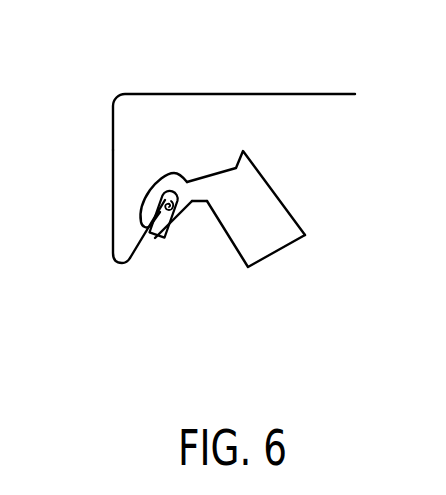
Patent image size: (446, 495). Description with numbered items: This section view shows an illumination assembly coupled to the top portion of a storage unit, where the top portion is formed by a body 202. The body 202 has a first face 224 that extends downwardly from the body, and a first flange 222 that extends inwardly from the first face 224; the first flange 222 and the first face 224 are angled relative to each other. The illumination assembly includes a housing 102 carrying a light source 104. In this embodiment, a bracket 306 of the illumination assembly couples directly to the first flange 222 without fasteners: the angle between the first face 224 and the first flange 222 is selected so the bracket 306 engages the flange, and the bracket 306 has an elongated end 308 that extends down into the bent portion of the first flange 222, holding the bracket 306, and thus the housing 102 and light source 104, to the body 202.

The housing 102 is at (278, 253).
The light source 104 is at (223, 228).
The body 202 is at (253, 93).
The first flange 222 is at (143, 238).
The first face 224 is at (112, 162).
The bracket 306 is at (147, 191).
The elongated end 308 is at (178, 216).